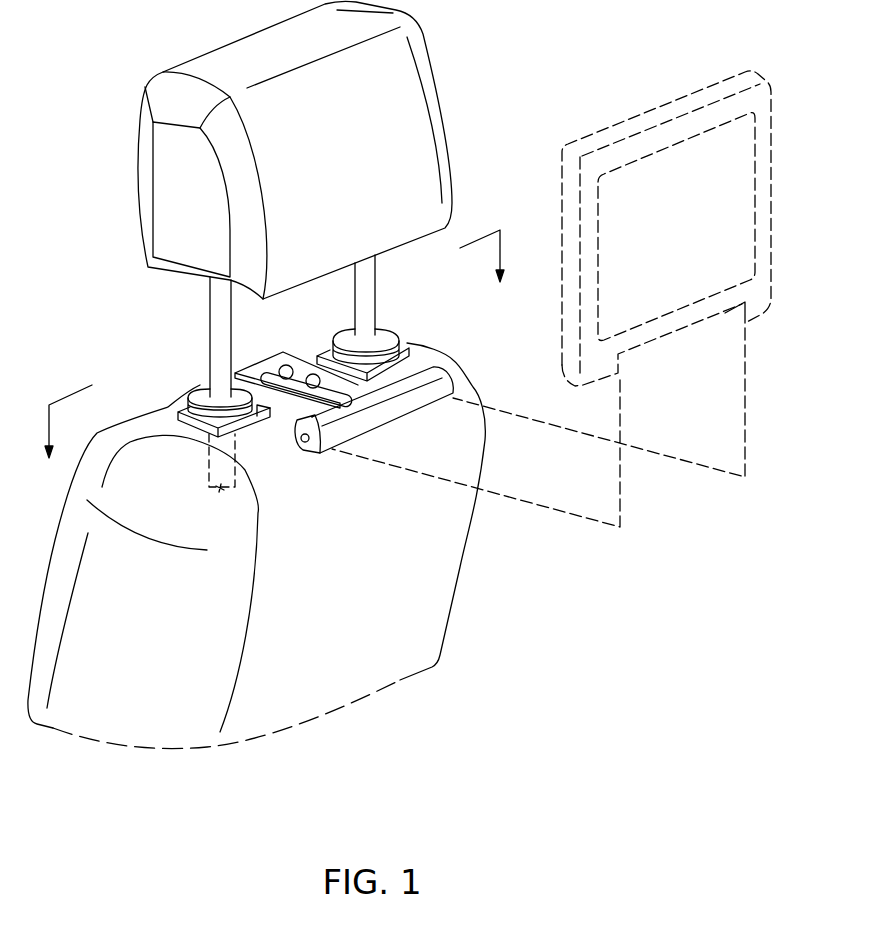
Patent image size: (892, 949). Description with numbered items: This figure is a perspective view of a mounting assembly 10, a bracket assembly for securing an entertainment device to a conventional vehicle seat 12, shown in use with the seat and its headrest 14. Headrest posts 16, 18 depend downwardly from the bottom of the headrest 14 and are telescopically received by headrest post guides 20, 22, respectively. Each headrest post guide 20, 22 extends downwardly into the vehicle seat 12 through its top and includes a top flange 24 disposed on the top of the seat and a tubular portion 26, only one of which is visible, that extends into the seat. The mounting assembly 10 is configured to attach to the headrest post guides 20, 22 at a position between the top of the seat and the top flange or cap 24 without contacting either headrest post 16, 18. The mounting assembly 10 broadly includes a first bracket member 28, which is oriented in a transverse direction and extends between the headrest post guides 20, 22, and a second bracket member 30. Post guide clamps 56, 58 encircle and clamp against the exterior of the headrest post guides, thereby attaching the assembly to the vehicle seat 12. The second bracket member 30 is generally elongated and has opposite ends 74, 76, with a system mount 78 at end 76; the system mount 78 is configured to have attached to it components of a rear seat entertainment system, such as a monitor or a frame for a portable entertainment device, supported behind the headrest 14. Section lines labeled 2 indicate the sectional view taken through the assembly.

The section line 2- 2 is at (276, 359).
The mounting assembly 10 is at (304, 396).
The vehicle seat 12 is at (450, 567).
The headrest 14 is at (432, 68).
The headrest post 16 is at (210, 313).
The headrest post 18 is at (375, 273).
The headrest post guide 20 is at (178, 412).
The headrest post guide 22 is at (390, 328).
The top flange 24 is at (193, 389).
The tubular portion 26 is at (223, 490).
The first bracket member 28 is at (268, 416).
The second bracket member 30 is at (298, 364).
The post guide clamp 56 is at (180, 429).
The post guide clamp 58 is at (438, 353).
The end 74 is at (262, 368).
The end 76 is at (365, 393).
The system mount 78 is at (358, 428).